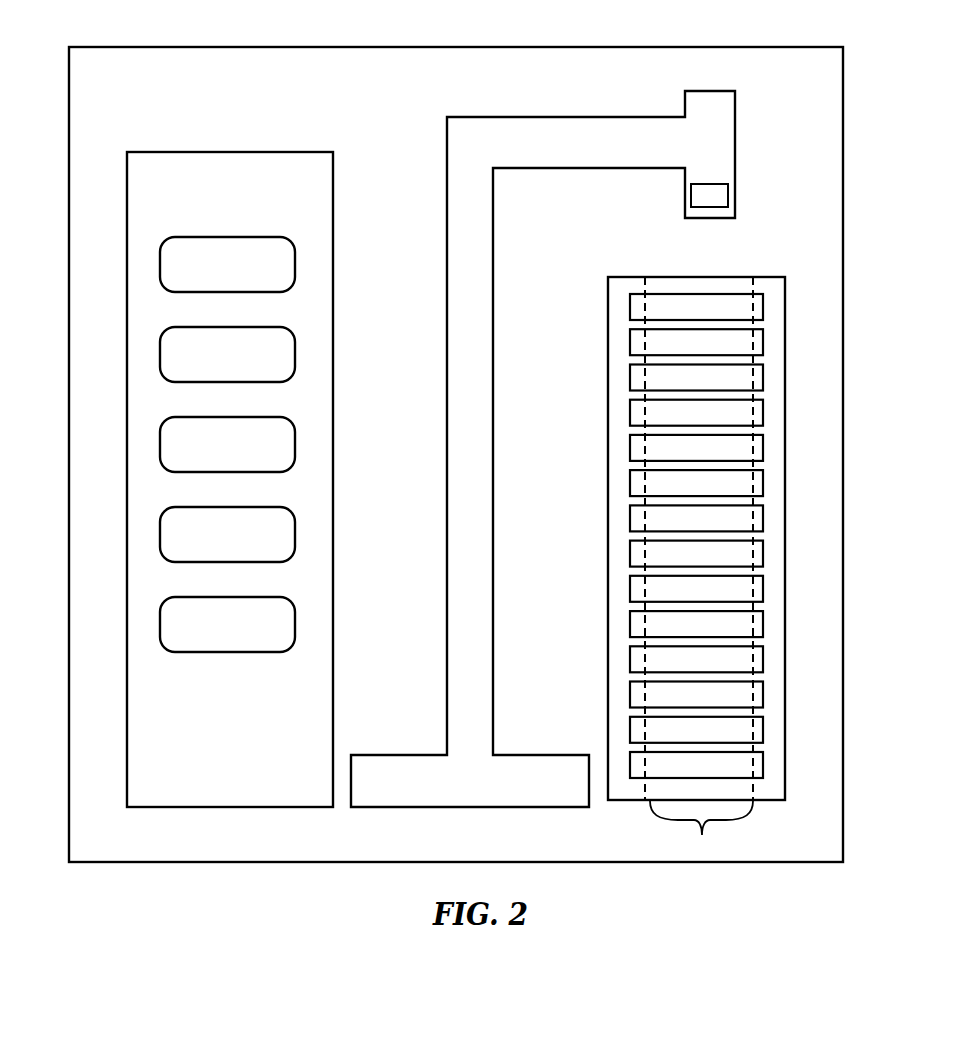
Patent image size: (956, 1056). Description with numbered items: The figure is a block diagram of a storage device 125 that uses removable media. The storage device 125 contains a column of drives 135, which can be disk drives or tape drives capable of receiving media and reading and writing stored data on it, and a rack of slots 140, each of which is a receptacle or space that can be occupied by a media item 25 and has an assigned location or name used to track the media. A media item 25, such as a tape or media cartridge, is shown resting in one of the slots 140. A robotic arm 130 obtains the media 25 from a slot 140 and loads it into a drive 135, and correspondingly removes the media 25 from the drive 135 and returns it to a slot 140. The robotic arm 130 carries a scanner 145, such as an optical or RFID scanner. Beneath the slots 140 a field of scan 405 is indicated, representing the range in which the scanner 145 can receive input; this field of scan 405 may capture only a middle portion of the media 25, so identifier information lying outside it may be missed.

The storage device 125 is at (452, 47).
The robotic arm 130 is at (572, 117).
The drives 135 is at (288, 152).
The slots 140 is at (671, 525).
The scanner 145 is at (691, 190).
The media items 25 is at (773, 277).
The field of scan 405 is at (754, 805).